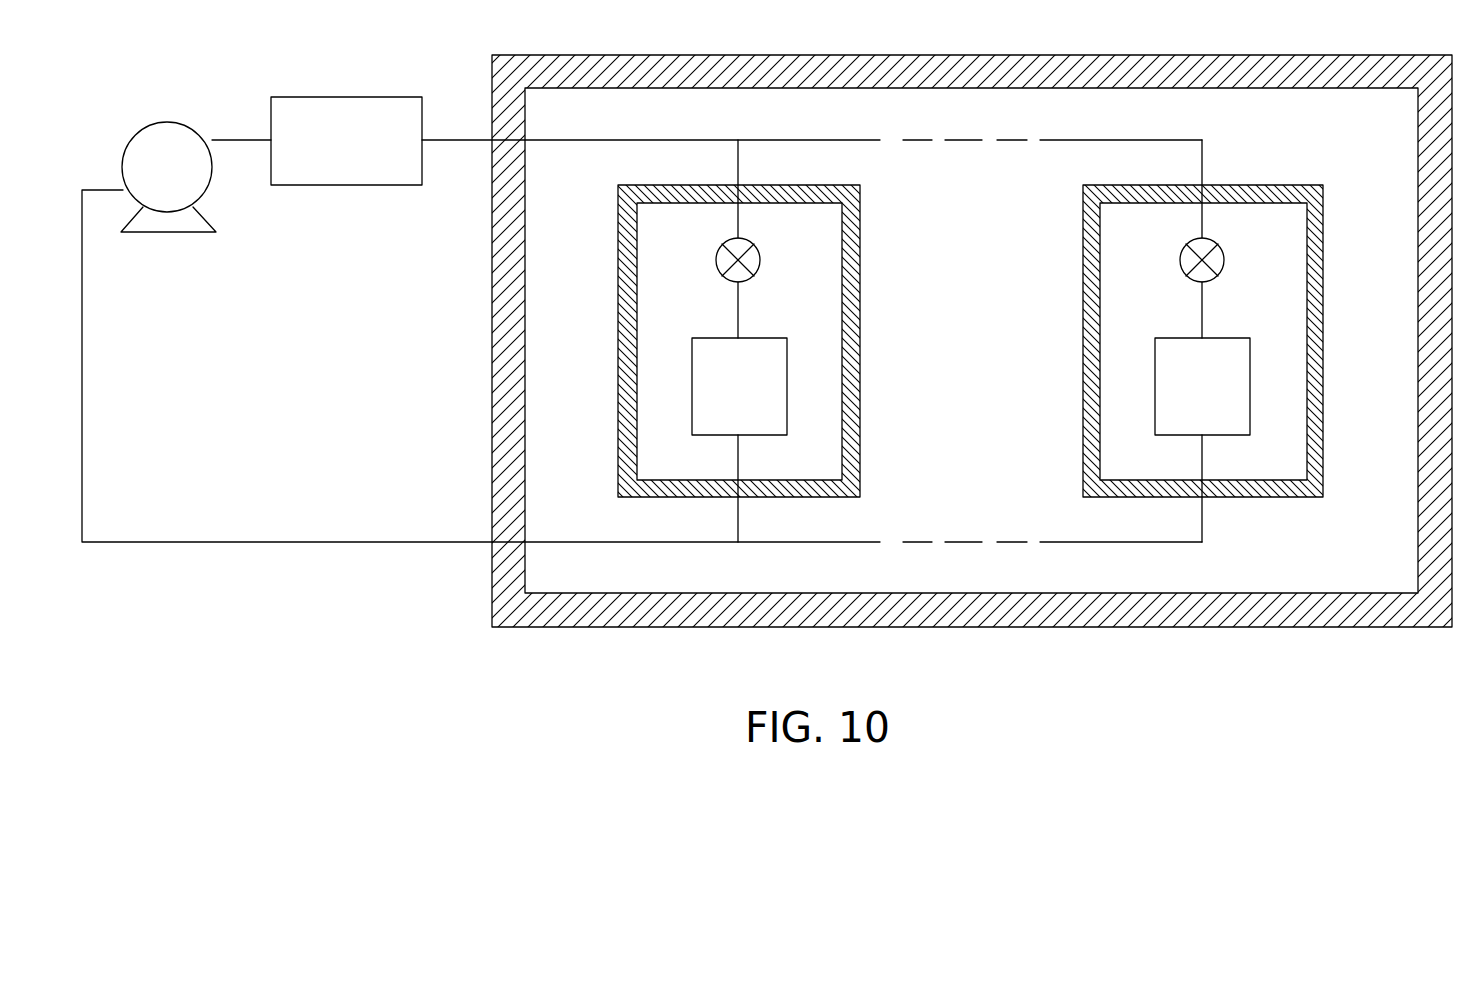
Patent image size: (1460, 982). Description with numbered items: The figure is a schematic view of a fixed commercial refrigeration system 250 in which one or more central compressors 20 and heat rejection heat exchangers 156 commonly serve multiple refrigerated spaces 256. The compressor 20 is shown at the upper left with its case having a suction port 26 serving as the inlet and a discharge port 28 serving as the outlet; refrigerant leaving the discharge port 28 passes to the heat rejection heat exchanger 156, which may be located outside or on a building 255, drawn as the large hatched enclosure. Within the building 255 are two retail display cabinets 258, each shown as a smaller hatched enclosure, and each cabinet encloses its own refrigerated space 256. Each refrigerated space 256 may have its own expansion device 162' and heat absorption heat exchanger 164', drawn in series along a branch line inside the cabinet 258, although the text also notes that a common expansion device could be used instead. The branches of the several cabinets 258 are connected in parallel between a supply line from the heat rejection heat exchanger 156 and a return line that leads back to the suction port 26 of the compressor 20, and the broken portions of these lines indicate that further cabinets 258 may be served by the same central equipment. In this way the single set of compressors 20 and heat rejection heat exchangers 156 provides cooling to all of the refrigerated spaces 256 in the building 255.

The compressor 20 is at (175, 180).
The suction port 26 is at (123, 190).
The discharge port 28 is at (205, 135).
The heat rejection heat exchanger 156 is at (364, 134).
The fixed commercial refrigeration system 250 is at (385, 650).
The building 255 is at (927, 640).
The retail display cabinet 258 is at (862, 418).
The refrigerated space 256 is at (820, 304).
The expansion device 162' is at (935, 272).
The heat absorption heat exchanger 164' is at (971, 386).